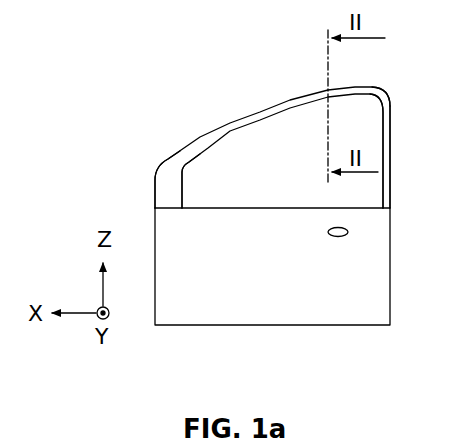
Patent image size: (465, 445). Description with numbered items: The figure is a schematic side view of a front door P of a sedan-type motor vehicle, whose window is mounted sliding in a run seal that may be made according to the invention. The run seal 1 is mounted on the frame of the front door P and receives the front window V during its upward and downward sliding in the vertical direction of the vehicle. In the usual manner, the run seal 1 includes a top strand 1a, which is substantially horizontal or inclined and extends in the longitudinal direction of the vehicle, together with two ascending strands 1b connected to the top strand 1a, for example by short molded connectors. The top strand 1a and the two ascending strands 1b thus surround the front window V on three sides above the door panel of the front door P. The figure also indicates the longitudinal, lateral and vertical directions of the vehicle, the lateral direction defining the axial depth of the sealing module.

The run seal 1 is at (279, 128).
The top strand 1a is at (230, 128).
The ascending strands 1b is at (153, 196).
The front window V is at (281, 189).
The front door P is at (220, 330).